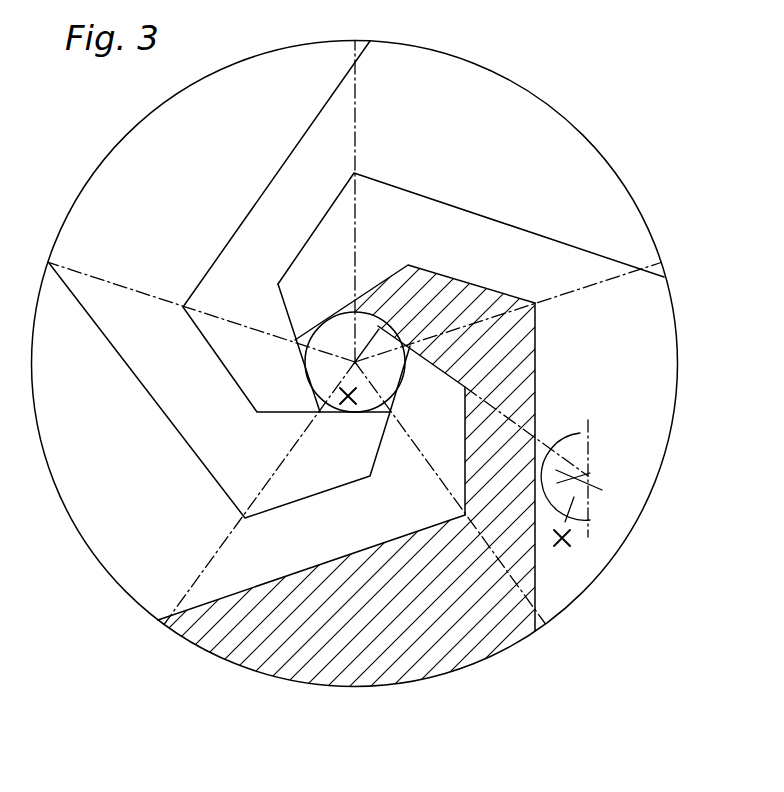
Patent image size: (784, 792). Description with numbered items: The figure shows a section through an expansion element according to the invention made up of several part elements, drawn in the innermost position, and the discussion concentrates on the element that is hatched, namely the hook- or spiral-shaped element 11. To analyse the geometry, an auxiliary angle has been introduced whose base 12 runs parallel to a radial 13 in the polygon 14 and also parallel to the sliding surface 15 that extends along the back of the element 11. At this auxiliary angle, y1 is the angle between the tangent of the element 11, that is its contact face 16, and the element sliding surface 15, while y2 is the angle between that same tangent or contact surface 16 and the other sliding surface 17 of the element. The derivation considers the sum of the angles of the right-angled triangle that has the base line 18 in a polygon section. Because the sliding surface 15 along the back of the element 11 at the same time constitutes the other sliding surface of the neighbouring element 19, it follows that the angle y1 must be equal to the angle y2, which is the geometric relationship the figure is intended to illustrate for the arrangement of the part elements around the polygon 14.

The hook- or spiral-shaped element 11 is at (419, 670).
The base of auxiliary angle 12 is at (589, 476).
The radial 13 is at (357, 322).
The polygon 14 is at (315, 336).
The sliding surface 15 is at (527, 365).
The contact face 16 is at (437, 285).
The other sliding surface 17 is at (300, 582).
The base line 18 is at (400, 375).
The neighbouring element 19 is at (654, 395).
The angle y1 is at (575, 444).
The angle y2 is at (591, 488).